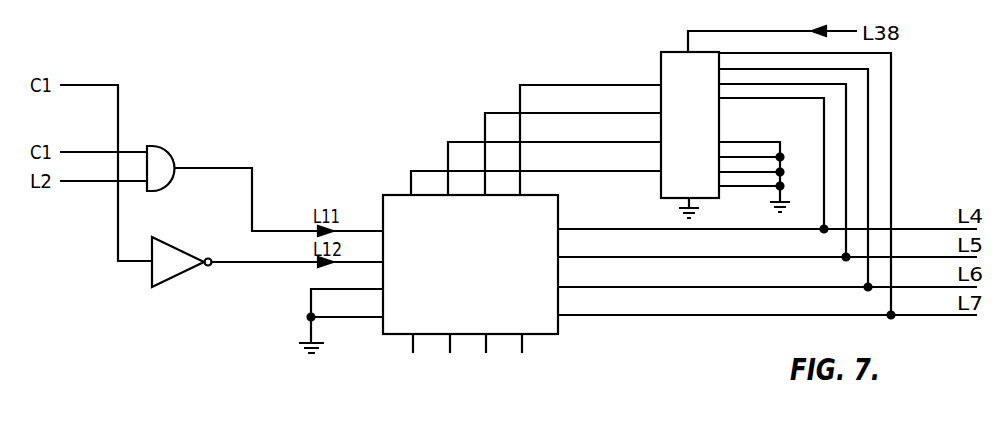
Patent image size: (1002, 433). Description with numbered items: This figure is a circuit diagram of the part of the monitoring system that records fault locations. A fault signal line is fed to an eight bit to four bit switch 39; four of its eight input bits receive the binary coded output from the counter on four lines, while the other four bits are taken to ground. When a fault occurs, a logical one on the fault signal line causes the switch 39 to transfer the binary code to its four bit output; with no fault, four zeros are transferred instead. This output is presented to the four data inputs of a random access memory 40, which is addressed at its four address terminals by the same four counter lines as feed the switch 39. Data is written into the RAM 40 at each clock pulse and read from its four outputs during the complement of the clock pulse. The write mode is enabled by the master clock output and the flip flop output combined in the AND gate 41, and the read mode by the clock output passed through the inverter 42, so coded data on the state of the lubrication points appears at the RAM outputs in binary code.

The eight bit to four bit switch 39 is at (678, 160).
The random access memory 40 is at (446, 300).
The AND gate 41 is at (265, 188).
The inverter 42 is at (267, 262).